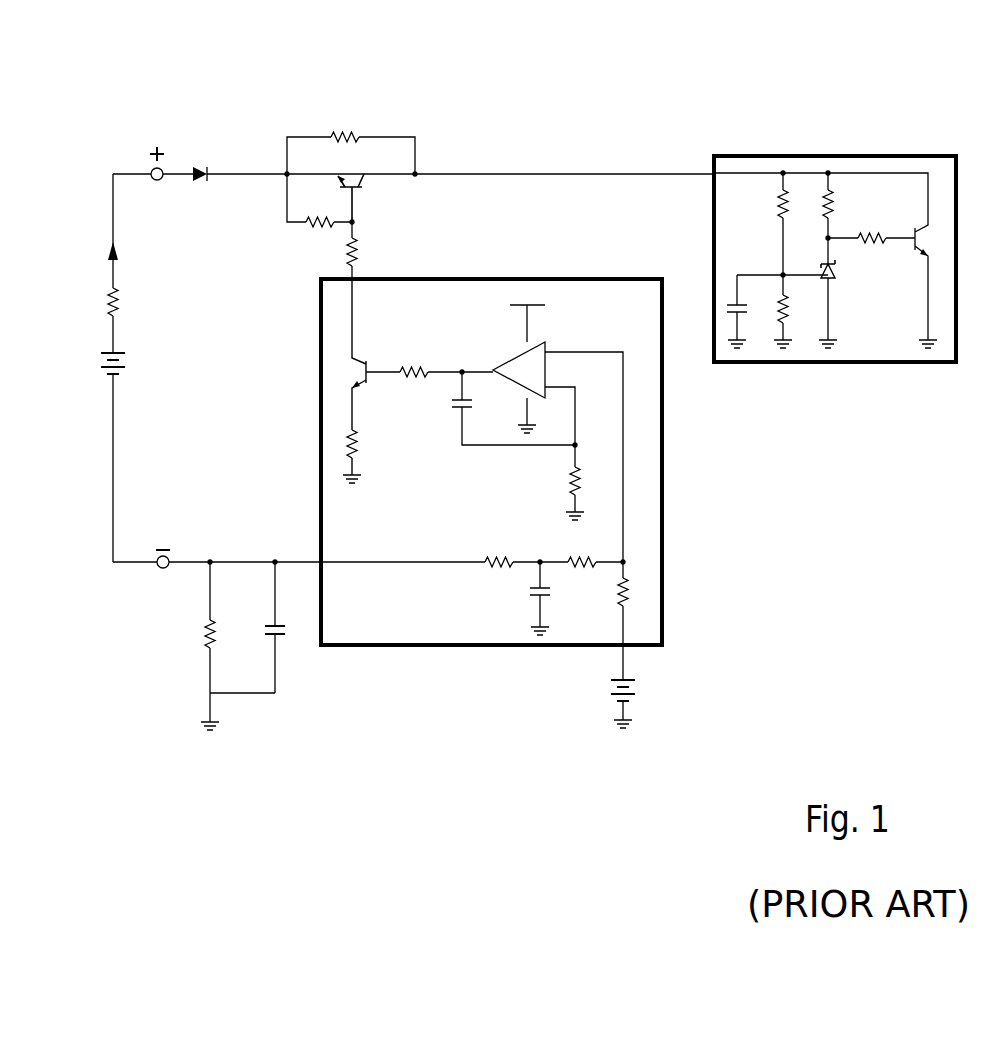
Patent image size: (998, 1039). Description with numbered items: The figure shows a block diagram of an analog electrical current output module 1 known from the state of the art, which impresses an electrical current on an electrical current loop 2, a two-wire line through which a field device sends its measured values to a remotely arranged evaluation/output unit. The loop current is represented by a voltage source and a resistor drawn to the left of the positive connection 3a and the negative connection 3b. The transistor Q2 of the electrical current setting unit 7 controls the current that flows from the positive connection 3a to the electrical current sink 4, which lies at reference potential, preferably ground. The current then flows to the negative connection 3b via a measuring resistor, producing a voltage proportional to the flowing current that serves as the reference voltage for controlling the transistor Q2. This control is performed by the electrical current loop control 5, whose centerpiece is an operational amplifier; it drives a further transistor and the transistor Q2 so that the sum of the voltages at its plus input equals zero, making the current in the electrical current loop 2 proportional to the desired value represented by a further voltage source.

The electrical current output module 1 is at (521, 464).
The electrical current loop 2 is at (148, 459).
The positive connection 3a is at (165, 168).
The negative connection 3b is at (163, 569).
The electrical current sink 4 is at (830, 375).
The electrical current loop control 5 is at (509, 658).
The electrical current setting unit 7 is at (368, 157).
The transistor Q2 is at (362, 192).